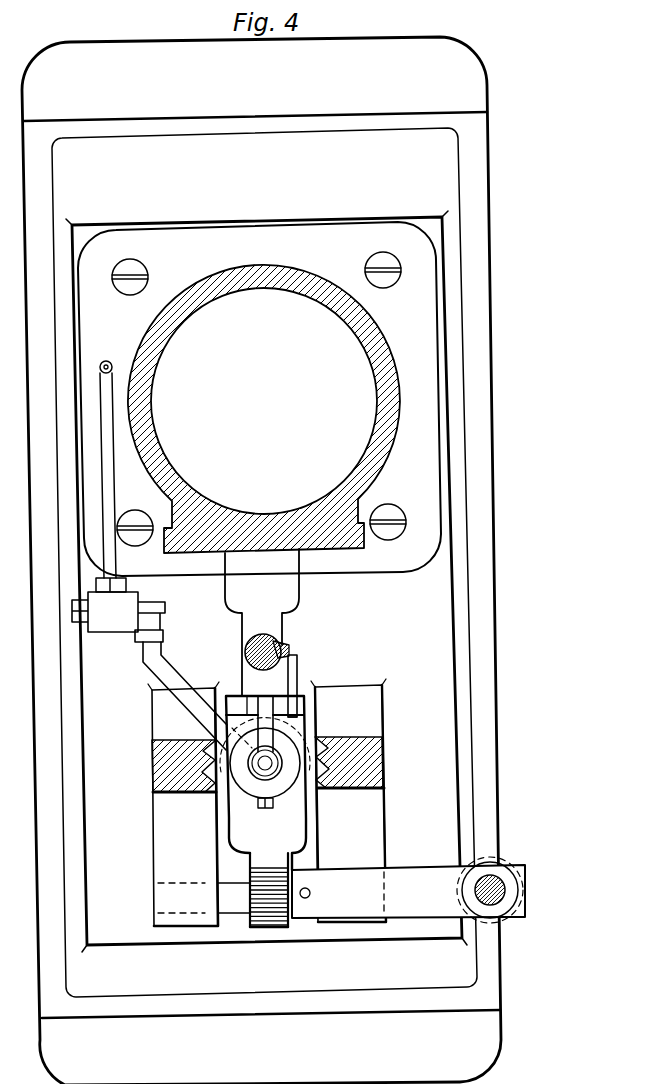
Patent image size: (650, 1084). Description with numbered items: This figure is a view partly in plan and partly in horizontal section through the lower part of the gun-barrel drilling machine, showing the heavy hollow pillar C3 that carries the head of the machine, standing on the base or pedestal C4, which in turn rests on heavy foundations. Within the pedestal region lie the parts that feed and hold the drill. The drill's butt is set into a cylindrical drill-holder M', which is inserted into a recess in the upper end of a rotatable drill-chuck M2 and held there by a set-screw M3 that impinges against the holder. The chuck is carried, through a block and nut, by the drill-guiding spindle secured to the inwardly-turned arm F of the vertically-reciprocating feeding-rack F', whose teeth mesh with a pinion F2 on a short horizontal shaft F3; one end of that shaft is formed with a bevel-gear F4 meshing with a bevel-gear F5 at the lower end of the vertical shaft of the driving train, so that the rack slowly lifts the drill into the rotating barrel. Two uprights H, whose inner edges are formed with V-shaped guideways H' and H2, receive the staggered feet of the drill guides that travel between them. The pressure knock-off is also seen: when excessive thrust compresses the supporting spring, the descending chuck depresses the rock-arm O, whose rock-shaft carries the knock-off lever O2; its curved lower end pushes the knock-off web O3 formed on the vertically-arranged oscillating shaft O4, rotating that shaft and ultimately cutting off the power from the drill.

The hollow pillar C3 is at (264, 409).
The base or pedestal C4 is at (266, 598).
The rock-arm O is at (272, 735).
The knock-off lever O2 is at (299, 661).
The knock-off web O3 is at (286, 651).
The oscillating shaft O4 is at (246, 653).
The uprights H is at (262, 802).
The V-shaped guideway H' is at (267, 756).
The V-shaped guideway H2 is at (324, 797).
The drill-holder M' is at (238, 772).
The drill-chuck M2 is at (264, 772).
The set-screw M3 is at (274, 804).
The inwardly-turned arm F is at (253, 878).
The feeding-rack F' is at (269, 888).
The pinion F2 is at (272, 929).
The short horizontal shaft F3 is at (310, 908).
The bevel-gear F4 is at (497, 880).
The bevel-gear F5 is at (518, 864).